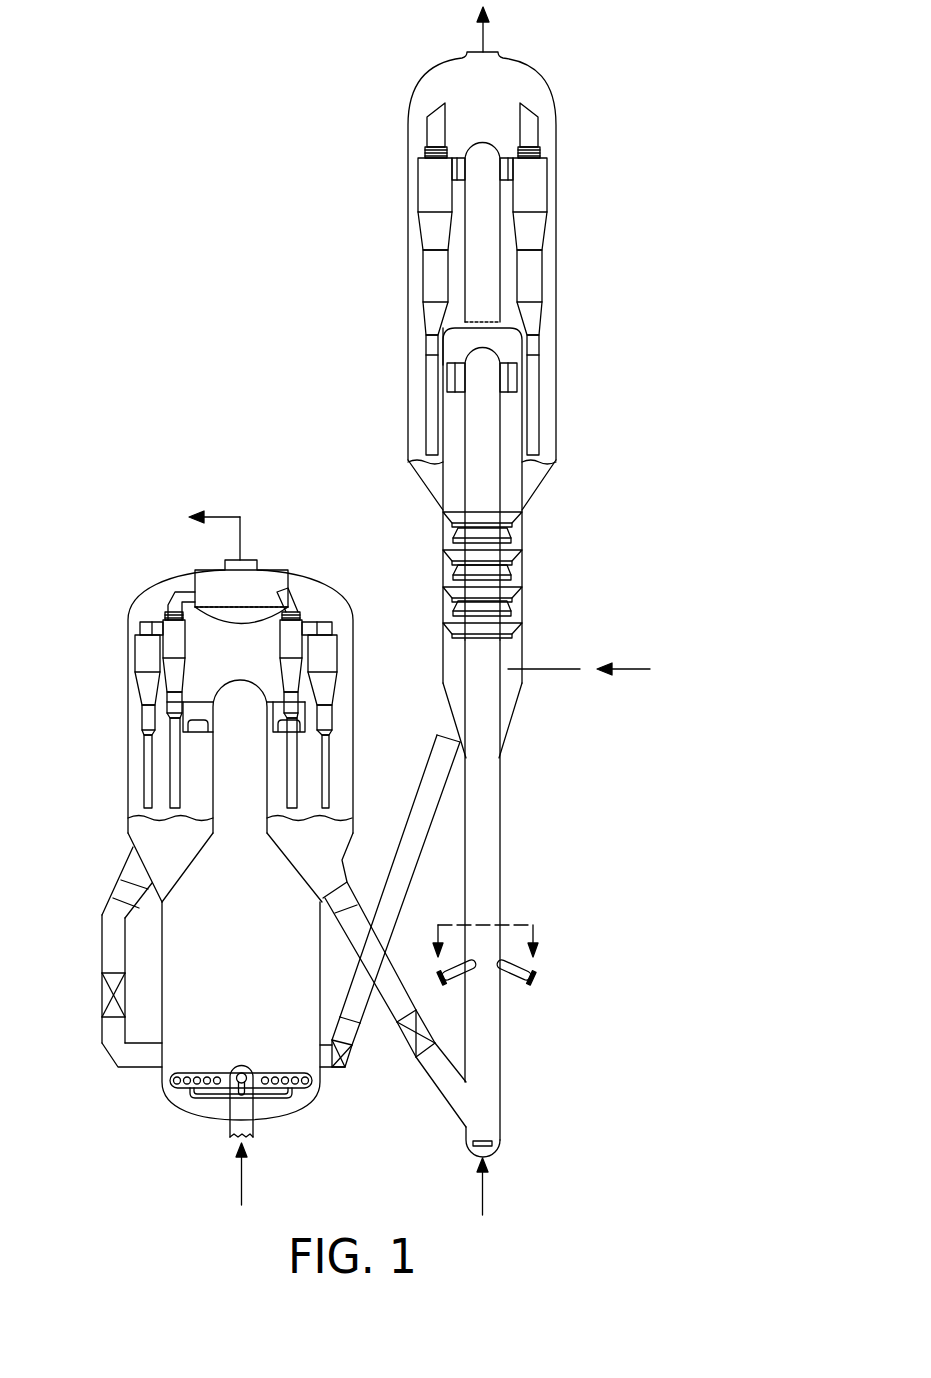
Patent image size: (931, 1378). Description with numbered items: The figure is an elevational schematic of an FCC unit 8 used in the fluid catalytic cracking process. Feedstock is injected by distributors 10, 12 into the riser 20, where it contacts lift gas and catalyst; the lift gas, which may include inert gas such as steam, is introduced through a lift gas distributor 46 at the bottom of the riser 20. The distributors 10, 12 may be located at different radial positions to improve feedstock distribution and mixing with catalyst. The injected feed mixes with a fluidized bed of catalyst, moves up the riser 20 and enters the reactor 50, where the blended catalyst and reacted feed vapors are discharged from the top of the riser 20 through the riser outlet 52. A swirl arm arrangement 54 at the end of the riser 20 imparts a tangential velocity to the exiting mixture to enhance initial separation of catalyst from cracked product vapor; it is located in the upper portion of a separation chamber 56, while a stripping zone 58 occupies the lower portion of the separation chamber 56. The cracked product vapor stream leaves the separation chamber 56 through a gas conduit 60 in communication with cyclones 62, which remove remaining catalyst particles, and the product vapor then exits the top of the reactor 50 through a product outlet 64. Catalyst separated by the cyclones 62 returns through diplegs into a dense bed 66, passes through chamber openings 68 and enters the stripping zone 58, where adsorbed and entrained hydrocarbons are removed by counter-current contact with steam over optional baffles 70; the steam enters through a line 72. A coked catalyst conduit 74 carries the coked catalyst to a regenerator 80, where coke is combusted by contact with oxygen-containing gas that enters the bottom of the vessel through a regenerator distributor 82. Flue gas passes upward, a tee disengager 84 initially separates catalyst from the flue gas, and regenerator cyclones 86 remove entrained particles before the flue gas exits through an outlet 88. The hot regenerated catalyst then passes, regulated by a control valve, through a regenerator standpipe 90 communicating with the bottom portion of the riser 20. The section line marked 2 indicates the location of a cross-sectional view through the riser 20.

The FCC unit 8 is at (345, 393).
The distributor 10 is at (461, 978).
The distributor 12 is at (512, 981).
The riser 20 is at (500, 853).
The lift gas distributor 46 is at (472, 1143).
The reactor 50 is at (557, 243).
The riser outlet 52 is at (513, 373).
The swirl arm arrangement 54 is at (457, 358).
The separation chamber 56 is at (518, 412).
The stripping zone 58 is at (523, 540).
The gas conduit 60 is at (492, 278).
The cyclones 62 is at (432, 187).
The product outlet 64 is at (485, 37).
The dense bed 66 is at (410, 462).
The chamber openings 68 is at (438, 492).
The baffles 70 is at (505, 607).
The line 72 is at (545, 672).
The coked catalyst conduit 74 is at (420, 790).
The regenerator 80 is at (195, 932).
The regenerator distributor 82 is at (230, 1130).
The tee disengager 84 is at (193, 706).
The regenerator cyclones 86 is at (152, 652).
The outlet 88 is at (256, 560).
The regenerator standpipe 90 is at (390, 1010).
The section line 2- 2 is at (485, 926).